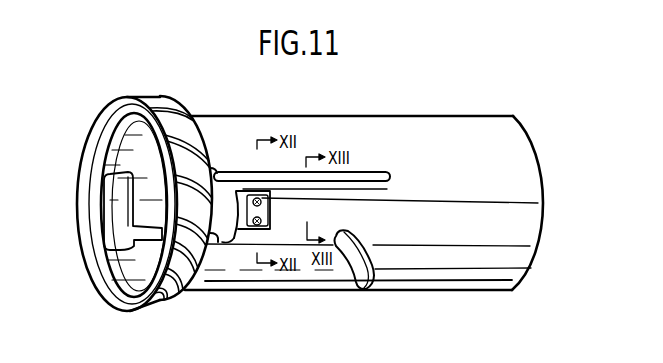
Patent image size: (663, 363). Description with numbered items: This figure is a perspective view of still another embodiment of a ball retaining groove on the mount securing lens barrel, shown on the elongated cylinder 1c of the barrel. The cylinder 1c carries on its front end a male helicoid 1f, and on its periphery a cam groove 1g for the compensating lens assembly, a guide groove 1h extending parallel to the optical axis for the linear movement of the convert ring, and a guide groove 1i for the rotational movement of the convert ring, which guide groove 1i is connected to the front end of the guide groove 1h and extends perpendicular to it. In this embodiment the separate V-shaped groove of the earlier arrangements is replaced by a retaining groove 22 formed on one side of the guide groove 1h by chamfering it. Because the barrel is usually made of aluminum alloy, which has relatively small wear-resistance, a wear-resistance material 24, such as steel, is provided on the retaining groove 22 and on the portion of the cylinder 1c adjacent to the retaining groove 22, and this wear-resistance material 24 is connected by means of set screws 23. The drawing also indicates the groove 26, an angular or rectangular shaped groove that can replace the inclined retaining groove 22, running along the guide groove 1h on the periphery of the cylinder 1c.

The elongated cylinder 1c is at (476, 128).
The male helicoid 1f is at (160, 97).
The cam groove 1g is at (365, 290).
The guide groove 1h is at (372, 172).
The guide groove 1i is at (110, 212).
The retaining groove 22 is at (258, 184).
The set screws 23 is at (252, 203).
The wear-resistance material 24 is at (251, 229).
The angular or rectangular shaped groove 26 is at (356, 186).